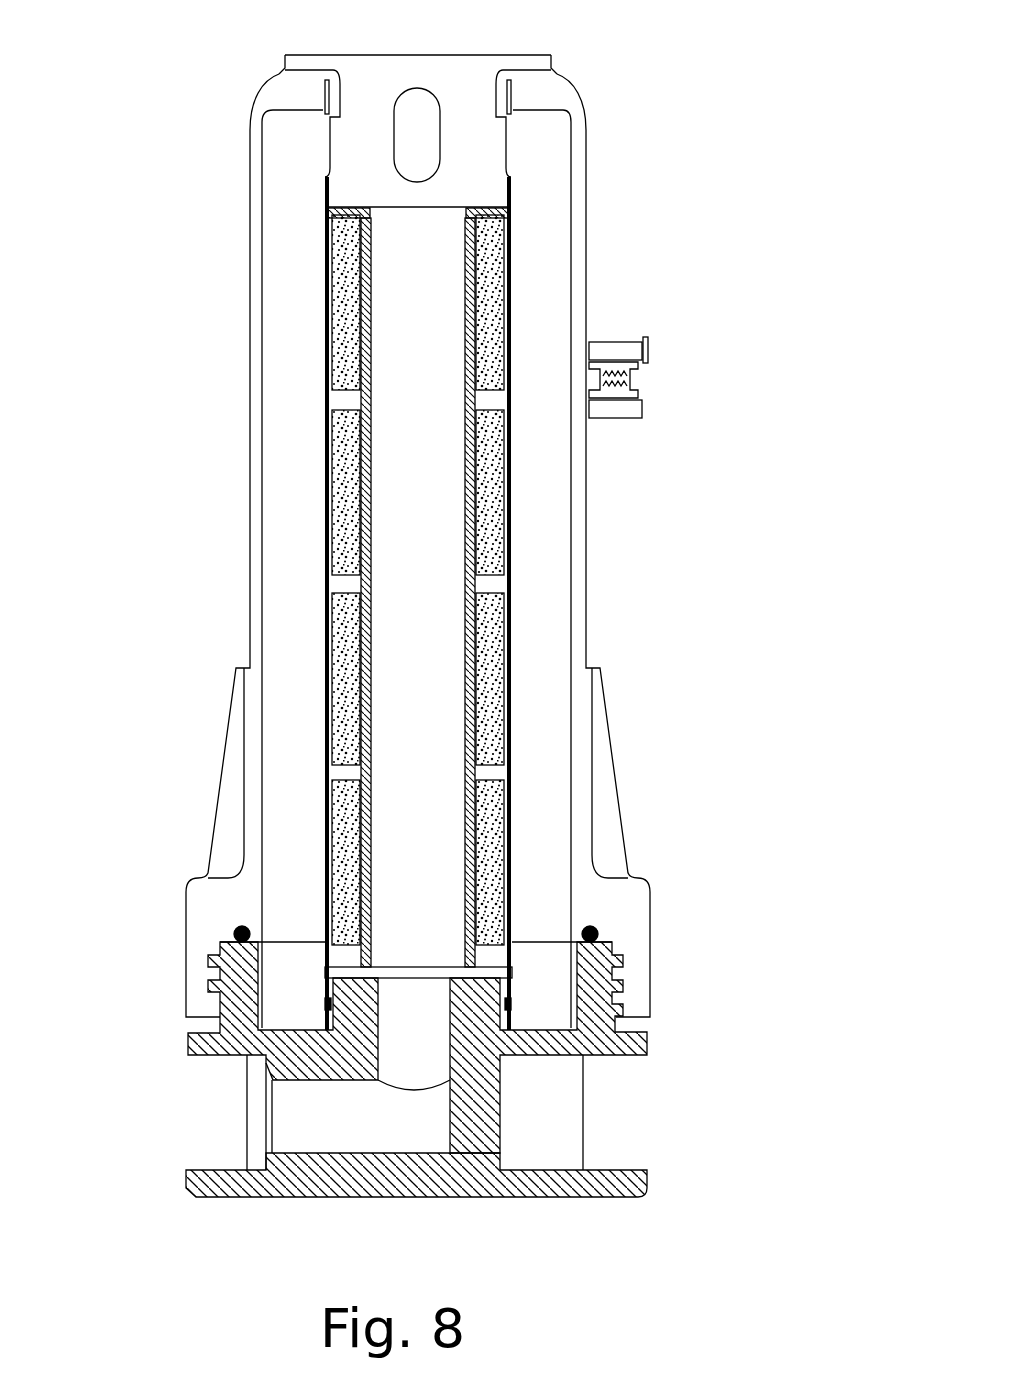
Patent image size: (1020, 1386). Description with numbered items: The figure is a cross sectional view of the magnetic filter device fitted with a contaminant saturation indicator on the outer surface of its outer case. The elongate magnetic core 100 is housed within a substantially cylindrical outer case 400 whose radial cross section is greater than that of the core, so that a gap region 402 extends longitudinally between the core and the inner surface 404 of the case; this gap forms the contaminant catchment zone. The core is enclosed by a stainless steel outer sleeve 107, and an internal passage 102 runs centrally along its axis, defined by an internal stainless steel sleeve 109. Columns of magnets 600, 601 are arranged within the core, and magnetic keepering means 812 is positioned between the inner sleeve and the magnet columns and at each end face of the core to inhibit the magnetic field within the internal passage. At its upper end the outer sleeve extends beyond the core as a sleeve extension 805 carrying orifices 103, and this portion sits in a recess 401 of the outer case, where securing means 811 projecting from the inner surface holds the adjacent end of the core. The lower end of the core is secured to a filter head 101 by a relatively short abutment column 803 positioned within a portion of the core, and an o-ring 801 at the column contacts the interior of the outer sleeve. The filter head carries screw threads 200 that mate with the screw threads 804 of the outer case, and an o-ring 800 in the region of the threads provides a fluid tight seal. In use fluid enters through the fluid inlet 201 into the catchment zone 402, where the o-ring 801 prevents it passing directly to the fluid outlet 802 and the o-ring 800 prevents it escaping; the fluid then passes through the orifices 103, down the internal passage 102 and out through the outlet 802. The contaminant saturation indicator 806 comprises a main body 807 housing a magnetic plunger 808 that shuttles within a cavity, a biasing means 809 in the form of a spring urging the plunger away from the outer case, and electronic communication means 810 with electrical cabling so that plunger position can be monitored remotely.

The magnetic core 100 is at (530, 636).
The filter head 101 is at (375, 1190).
The internal passage 102 is at (438, 270).
The orifices 103 is at (412, 92).
The outer sleeve 107 is at (330, 296).
The internal stainless steel sleeve 109 is at (372, 525).
The screw threads 200 is at (622, 1005).
The fluid inlet 201 is at (628, 1109).
The outer case 400 is at (250, 640).
The recess 401 is at (306, 93).
The gap region 402 is at (550, 256).
The inner surface 404 is at (262, 412).
The column of magnets 600 is at (328, 553).
The column of magnets 601 is at (495, 602).
The o-ring 800 is at (248, 926).
The o-ring 801 is at (325, 1003).
The fluid outlet 802 is at (210, 1113).
The abutment column 803 is at (370, 1013).
The screw threads of outer case 804 is at (620, 960).
The sleeve extension 805 is at (491, 150).
The contaminant saturation indicator 806 is at (711, 361).
The main body 807 is at (620, 410).
The magnetic plunger 808 is at (640, 383).
The biasing means 809 is at (622, 366).
The electronic communication means 810 is at (647, 336).
The securing means 811 is at (336, 88).
The magnetic keepering means 812 is at (372, 393).